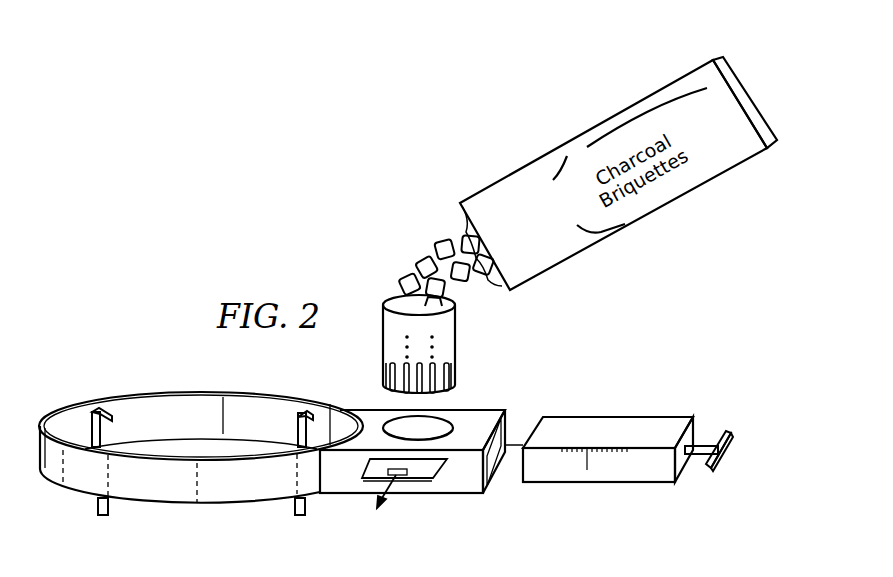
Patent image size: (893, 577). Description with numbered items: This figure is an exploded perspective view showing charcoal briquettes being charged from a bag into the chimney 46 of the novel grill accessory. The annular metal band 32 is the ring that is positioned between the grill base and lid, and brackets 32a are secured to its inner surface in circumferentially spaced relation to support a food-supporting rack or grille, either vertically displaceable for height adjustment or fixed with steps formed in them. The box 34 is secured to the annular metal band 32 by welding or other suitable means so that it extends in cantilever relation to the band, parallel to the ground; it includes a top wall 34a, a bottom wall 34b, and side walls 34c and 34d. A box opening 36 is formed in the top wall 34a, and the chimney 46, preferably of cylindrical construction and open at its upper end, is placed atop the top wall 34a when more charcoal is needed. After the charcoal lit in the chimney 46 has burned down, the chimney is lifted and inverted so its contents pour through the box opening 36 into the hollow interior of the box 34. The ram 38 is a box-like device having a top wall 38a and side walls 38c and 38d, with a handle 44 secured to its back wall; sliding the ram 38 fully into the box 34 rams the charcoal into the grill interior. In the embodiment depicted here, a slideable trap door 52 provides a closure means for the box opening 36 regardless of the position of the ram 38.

The annular metal band 32 is at (137, 392).
The brackets 32a is at (277, 418).
The box 34 is at (461, 497).
The top wall 34a is at (368, 412).
The bottom wall 34b is at (498, 468).
The side wall 34c is at (342, 478).
The side wall 34d is at (508, 418).
The box opening 36 is at (443, 423).
The ram 38 is at (641, 412).
The top wall 38a is at (597, 428).
The side wall 38c is at (613, 472).
The side wall 38d is at (688, 418).
The handle 44 is at (727, 452).
The chimney 46 is at (456, 337).
The slideable trap door 52 is at (415, 480).